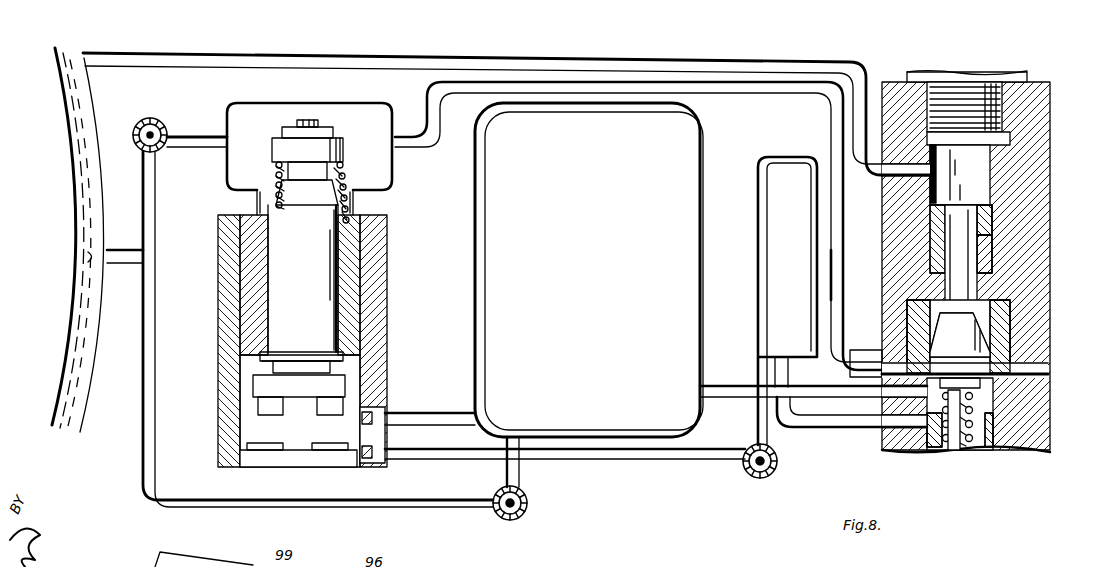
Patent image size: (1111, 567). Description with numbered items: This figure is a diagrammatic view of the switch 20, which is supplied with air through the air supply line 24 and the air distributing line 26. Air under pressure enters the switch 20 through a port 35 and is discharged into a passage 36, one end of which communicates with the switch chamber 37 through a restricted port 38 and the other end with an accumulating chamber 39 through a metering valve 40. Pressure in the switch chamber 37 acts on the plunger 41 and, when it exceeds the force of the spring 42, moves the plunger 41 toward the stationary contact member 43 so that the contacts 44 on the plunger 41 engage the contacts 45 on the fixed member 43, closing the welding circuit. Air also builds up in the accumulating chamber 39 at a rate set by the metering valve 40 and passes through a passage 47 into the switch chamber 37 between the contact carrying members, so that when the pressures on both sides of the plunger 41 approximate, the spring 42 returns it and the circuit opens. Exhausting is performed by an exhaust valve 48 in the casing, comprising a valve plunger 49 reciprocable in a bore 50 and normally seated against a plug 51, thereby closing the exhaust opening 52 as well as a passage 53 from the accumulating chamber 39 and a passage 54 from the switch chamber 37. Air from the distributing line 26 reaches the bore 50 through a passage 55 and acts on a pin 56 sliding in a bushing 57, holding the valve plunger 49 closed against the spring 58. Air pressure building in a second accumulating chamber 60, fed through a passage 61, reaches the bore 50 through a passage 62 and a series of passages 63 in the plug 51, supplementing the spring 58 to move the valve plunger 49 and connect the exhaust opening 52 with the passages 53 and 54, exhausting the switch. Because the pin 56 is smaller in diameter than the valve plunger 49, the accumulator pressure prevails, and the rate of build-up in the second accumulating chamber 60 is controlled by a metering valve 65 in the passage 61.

The switch 20 is at (183, 122).
The air supply line 24 is at (72, 205).
The air distributing line 26 is at (124, 268).
The port 35 is at (136, 252).
The passage 36 is at (157, 302).
The switch chamber 37 is at (266, 104).
The restricted port 38 is at (144, 126).
The accumulating chamber 39 is at (606, 436).
The metering valve 40 is at (527, 506).
The plunger 41 is at (338, 150).
The spring 42 is at (336, 172).
The stationary contact member 43 is at (302, 473).
The contacts 44 is at (320, 408).
The contacts 45 is at (313, 445).
The passage 47 is at (411, 412).
The exhaust valve 48 is at (975, 345).
The valve plunger 49 is at (982, 320).
The bore 50 is at (987, 406).
The plug 51 is at (976, 454).
The exhaust opening 52 is at (1046, 369).
The passage 53 is at (726, 400).
The passage 54 is at (838, 276).
The passage 55 is at (404, 66).
The pin 56 is at (985, 255).
The bushing 57 is at (988, 228).
The spring 58 is at (975, 414).
The second accumulating chamber 60 is at (756, 282).
The passage 61 is at (694, 462).
The passage 62 is at (831, 429).
The passages 63 is at (985, 433).
The metering valve 65 is at (762, 475).